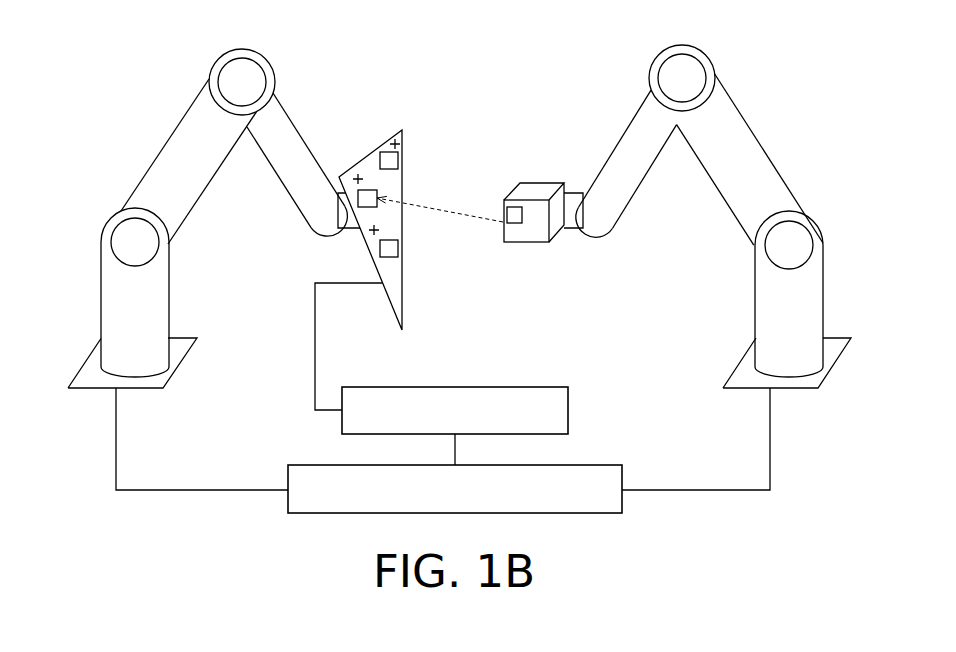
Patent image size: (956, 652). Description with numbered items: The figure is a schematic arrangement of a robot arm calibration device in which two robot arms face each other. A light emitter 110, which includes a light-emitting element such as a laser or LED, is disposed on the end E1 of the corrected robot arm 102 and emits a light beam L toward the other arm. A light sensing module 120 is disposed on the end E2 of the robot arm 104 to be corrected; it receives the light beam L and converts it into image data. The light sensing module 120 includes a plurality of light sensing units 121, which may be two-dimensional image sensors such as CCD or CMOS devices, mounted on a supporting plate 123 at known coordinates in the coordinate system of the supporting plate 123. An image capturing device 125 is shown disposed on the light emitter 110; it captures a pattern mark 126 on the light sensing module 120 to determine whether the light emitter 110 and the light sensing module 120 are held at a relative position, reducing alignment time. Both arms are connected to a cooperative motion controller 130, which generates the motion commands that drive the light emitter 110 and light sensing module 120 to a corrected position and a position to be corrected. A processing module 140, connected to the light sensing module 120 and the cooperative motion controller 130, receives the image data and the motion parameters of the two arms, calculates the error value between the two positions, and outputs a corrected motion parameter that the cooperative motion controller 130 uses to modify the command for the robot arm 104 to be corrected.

The corrected robot arm 102 is at (775, 88).
The robot arm to be corrected 104 is at (160, 97).
The light emitter 110 is at (532, 190).
The light sensing module 120 is at (385, 151).
The light sensing units 121 is at (399, 158).
The supporting plate 123 is at (370, 157).
The image capturing device 125 is at (512, 212).
The pattern mark 126 is at (340, 177).
The cooperative motion controller 130 is at (555, 465).
The processing module 140 is at (532, 387).
The end of the corrected robot arm E1 is at (578, 222).
The end of the robot arm to be corrected E2 is at (350, 230).
The light beam L is at (440, 202).